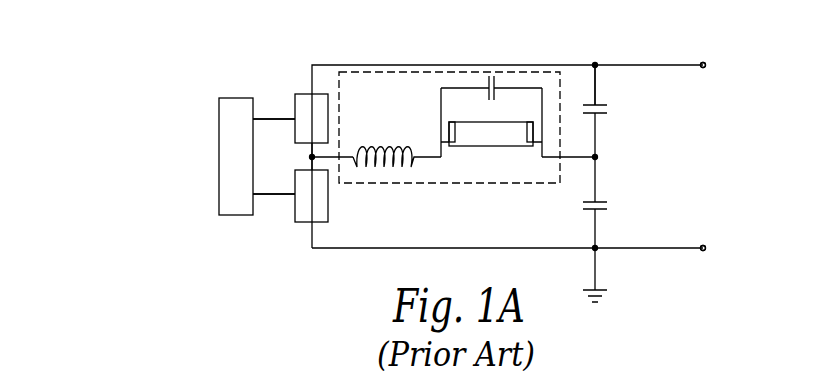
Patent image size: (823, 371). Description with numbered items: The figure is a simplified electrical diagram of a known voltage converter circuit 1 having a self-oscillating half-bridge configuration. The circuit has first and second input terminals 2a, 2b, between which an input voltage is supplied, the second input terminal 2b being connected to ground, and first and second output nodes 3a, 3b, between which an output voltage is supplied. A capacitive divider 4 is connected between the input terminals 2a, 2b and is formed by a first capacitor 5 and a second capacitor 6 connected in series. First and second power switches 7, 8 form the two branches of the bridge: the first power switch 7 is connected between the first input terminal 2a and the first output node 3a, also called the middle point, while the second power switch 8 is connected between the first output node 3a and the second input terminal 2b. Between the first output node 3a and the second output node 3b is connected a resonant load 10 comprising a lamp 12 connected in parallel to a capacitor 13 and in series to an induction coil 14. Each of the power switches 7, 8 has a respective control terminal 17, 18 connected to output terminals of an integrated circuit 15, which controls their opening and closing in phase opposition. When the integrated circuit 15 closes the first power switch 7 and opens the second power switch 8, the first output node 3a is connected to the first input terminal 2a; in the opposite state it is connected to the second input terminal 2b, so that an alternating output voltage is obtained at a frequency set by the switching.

The voltage converter circuit 1 is at (130, 190).
The first input terminal 2a is at (703, 62).
The second input terminal 2b is at (703, 245).
The first output node 3a is at (311, 157).
The second output node 3b is at (598, 157).
The capacitive divider 4 is at (645, 152).
The first capacitor 5 is at (600, 113).
The second capacitor 6 is at (602, 210).
The first power switch 7 is at (300, 105).
The second power switch 8 is at (305, 212).
The resonant load 10 is at (337, 72).
The lamp 12 is at (484, 138).
The capacitor 13 is at (488, 88).
The induction coil 14 is at (385, 168).
The integrated circuit 15 is at (232, 130).
The control terminal 17 is at (277, 118).
The control terminal 18 is at (273, 196).